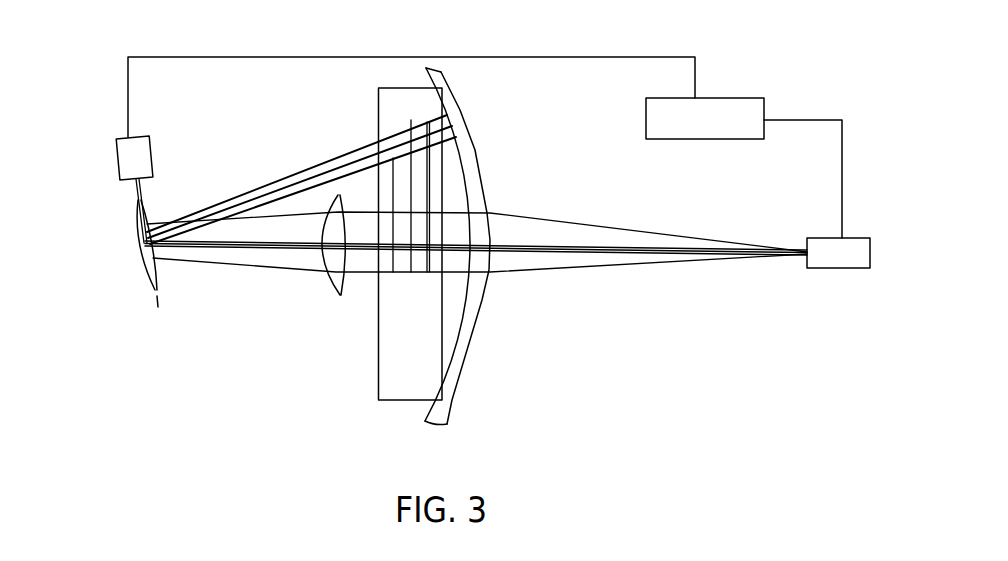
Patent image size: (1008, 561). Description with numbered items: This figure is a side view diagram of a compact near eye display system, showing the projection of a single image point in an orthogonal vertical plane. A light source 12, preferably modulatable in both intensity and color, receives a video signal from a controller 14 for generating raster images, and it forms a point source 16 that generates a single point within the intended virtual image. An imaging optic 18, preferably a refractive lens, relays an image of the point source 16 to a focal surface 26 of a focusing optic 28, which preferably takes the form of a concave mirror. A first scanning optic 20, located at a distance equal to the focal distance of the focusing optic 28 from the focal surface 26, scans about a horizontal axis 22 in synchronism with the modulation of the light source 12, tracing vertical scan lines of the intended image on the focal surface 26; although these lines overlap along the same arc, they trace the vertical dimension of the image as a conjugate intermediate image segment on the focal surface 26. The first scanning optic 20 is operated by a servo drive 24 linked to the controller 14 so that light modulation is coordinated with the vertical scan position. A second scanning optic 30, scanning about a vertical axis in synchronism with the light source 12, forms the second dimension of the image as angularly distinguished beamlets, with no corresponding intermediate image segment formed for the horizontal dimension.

The light source 12 is at (845, 267).
The controller 14 is at (720, 131).
The point source 16 is at (802, 253).
The imaging optic 18 is at (332, 290).
The first scanning optic 20 is at (137, 223).
The horizontal axis 22 is at (157, 304).
The servo drive 24 is at (127, 157).
The focal surface 26 is at (308, 178).
The focusing optic 28 is at (477, 170).
The second scanning optic 30 is at (420, 322).